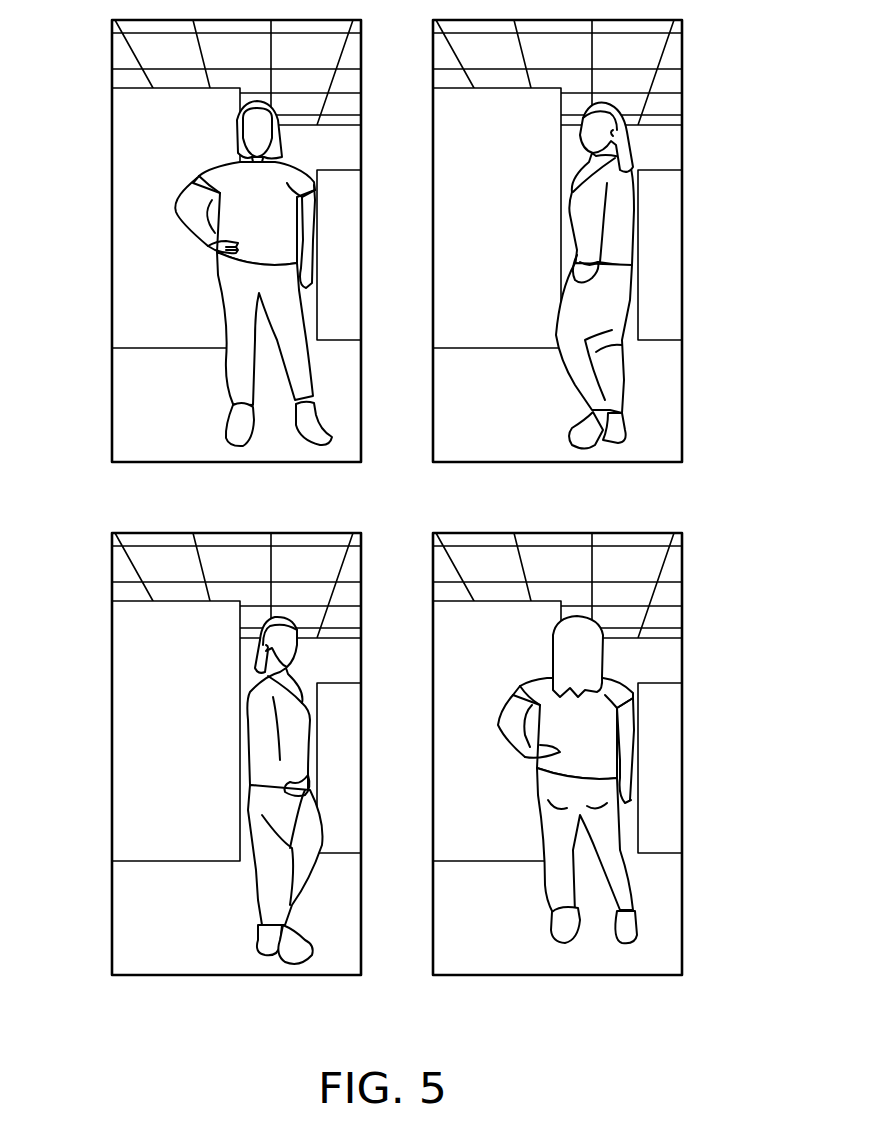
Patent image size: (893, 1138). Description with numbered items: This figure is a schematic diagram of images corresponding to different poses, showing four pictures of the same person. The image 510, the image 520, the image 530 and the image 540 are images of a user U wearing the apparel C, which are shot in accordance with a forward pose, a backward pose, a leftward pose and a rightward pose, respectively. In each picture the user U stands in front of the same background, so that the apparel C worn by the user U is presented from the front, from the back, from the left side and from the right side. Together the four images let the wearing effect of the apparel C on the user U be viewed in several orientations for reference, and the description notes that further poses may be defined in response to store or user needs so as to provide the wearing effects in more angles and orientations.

The image 510 is at (112, 155).
The image 520 is at (683, 155).
The image 530 is at (112, 668).
The image 540 is at (683, 668).
The user U is at (237, 117).
The apparel C is at (215, 165).